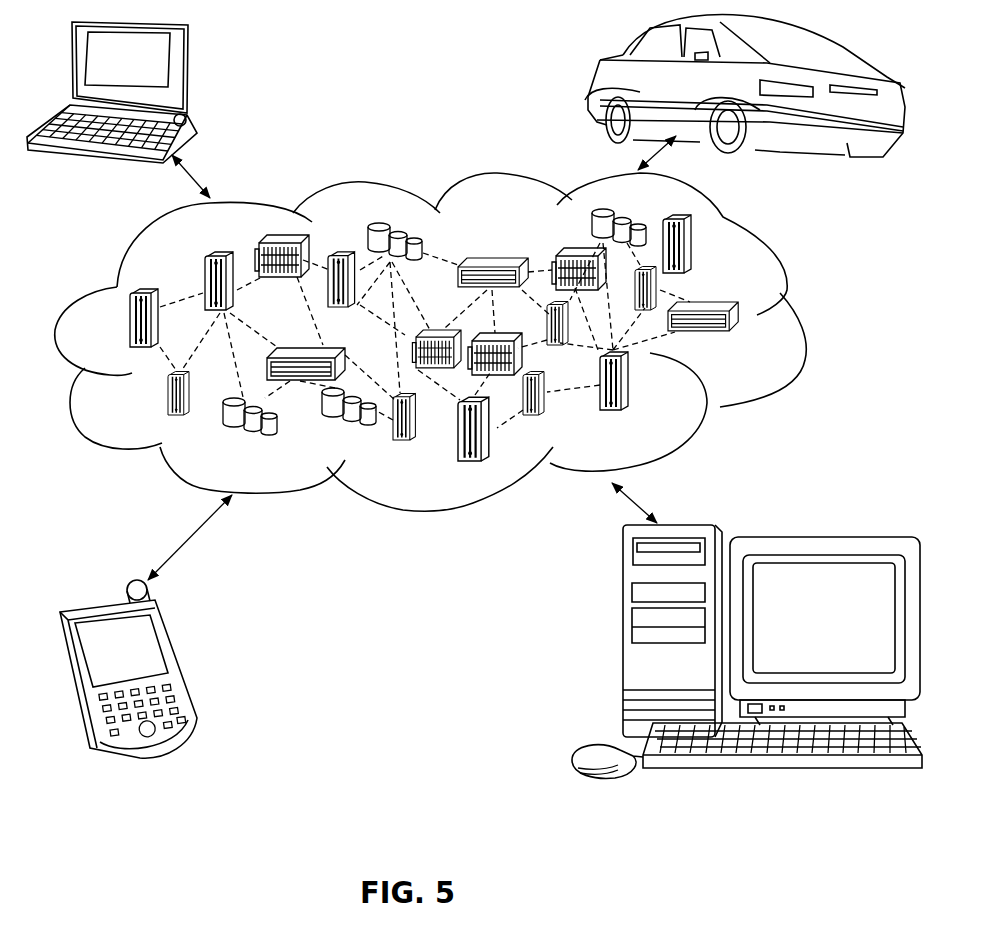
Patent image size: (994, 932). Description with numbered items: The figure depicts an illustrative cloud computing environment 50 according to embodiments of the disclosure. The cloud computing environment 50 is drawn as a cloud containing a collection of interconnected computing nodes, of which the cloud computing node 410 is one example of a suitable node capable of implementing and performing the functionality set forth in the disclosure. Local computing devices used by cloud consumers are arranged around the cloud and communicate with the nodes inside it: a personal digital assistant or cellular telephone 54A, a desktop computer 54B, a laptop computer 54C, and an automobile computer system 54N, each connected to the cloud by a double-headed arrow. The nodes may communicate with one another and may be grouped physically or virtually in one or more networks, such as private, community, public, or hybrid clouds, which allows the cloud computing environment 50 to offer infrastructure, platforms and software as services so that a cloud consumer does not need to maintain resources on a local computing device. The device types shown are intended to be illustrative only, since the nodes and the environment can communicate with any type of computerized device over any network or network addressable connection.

The cloud computing environment 50 is at (787, 278).
The cloud computing node 410 is at (764, 343).
The personal digital assistant or cellular telephone 54A is at (180, 660).
The desktop computer 54B is at (621, 642).
The laptop computer 54C is at (190, 70).
The automobile computer system 54N is at (600, 73).